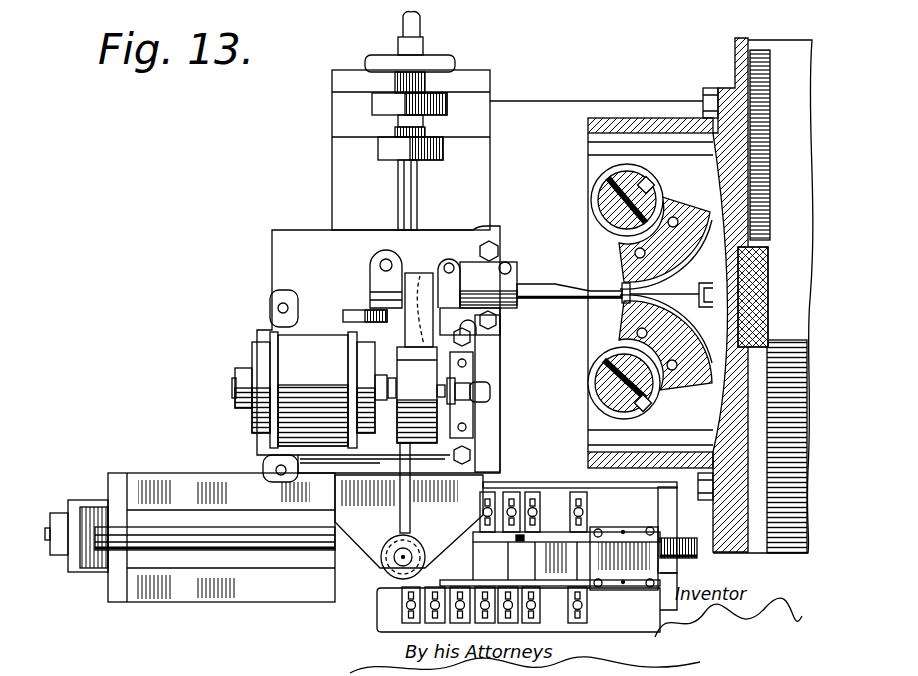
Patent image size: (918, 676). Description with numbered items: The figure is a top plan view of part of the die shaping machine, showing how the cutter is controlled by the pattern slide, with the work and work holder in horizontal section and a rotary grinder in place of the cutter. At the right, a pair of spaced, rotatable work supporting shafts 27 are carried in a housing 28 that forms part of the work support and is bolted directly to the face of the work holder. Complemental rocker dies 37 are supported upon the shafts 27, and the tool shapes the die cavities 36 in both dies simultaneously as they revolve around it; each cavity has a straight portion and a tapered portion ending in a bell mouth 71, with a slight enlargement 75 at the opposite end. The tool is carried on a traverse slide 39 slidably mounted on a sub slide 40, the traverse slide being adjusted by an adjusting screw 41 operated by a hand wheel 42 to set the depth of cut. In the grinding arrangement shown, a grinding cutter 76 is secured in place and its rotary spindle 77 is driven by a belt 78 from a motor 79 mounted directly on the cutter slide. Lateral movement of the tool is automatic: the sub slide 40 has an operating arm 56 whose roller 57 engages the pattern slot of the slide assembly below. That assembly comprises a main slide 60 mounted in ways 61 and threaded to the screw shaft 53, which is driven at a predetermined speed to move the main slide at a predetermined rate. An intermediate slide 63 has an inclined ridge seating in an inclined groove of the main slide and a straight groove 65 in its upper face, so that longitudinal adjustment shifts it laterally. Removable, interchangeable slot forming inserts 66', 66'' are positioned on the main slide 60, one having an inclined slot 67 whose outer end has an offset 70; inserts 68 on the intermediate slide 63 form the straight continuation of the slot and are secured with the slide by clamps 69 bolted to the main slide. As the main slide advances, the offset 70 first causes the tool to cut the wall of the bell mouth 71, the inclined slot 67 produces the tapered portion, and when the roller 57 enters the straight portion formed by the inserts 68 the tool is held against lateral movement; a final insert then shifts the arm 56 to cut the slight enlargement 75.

The work supporting shafts 27 is at (598, 200).
The housing 28 is at (645, 128).
The die cavities 36 is at (689, 295).
The rocker dies 37 is at (618, 268).
The traverse slide 39 is at (332, 186).
The sub slide 40 is at (343, 116).
The adjusting screw 41 is at (400, 125).
The hand wheel 42 is at (455, 63).
The screw shaft 53 is at (683, 557).
The operating arm 56 is at (409, 521).
The roller 57 is at (418, 545).
The main slide 60 is at (388, 616).
The ways 61 is at (168, 512).
The intermediate slide 63 is at (384, 553).
The straight groove 65 is at (333, 571).
The slot forming insert 66' is at (553, 537).
The slot forming insert 66'' is at (566, 502).
The inclined slot 67 is at (615, 565).
The inserts 68 is at (486, 560).
The clamps 69 is at (530, 583).
The offset 70 is at (650, 568).
The bell mouth 71 is at (698, 212).
The slight enlargement 75 is at (617, 315).
The grinding cutter 76 is at (618, 305).
The rotary spindle 77 is at (530, 286).
The belt 78 is at (416, 312).
The motor 79 is at (310, 353).